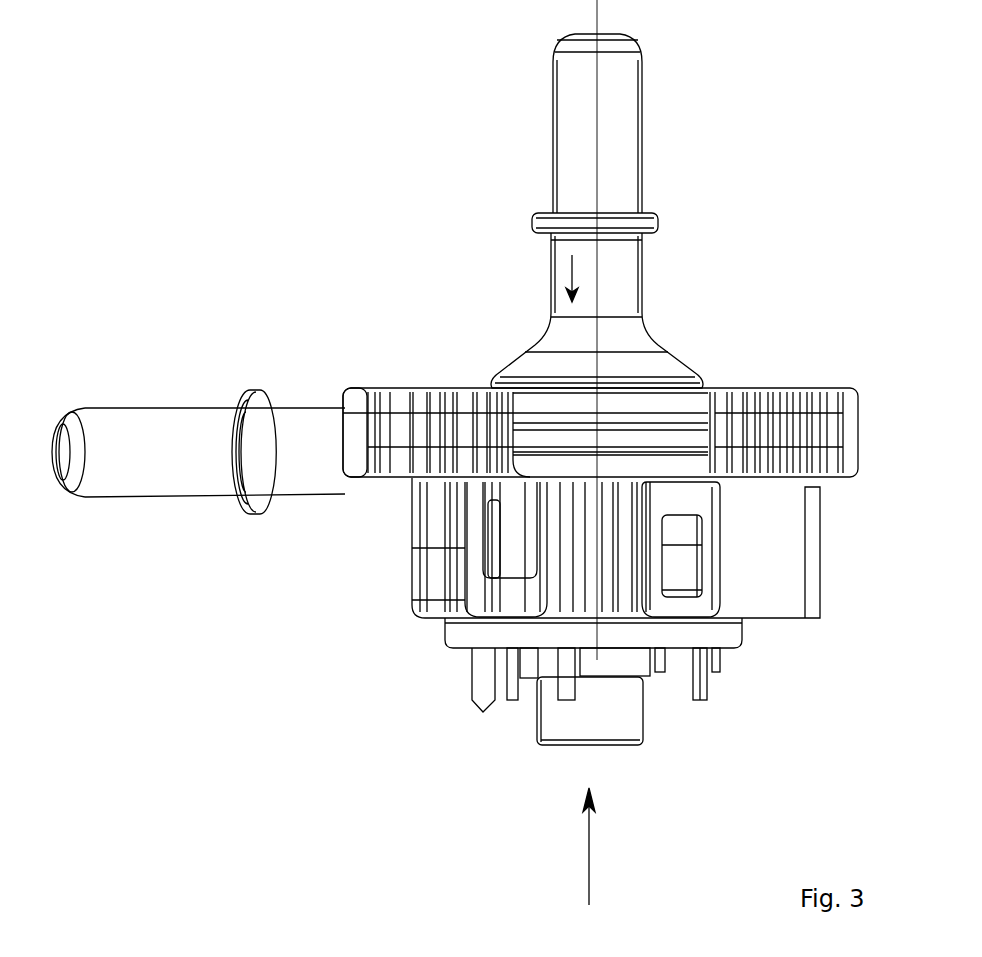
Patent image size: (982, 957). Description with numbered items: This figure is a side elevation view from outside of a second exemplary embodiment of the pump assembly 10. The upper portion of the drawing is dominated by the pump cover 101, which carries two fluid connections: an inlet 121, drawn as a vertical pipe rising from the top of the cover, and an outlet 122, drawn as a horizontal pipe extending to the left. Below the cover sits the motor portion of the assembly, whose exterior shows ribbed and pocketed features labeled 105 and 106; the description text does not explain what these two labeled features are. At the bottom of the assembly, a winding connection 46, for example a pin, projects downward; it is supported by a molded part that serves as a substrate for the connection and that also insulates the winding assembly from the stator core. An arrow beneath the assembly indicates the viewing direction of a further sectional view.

The pump assembly 10 is at (278, 186).
The inlet 121 is at (638, 77).
The pump cover 101 is at (650, 336).
The outlet 122 is at (163, 428).
The latching rib 105 is at (710, 547).
The latching window 106 is at (680, 528).
The winding connection 46 is at (704, 690).